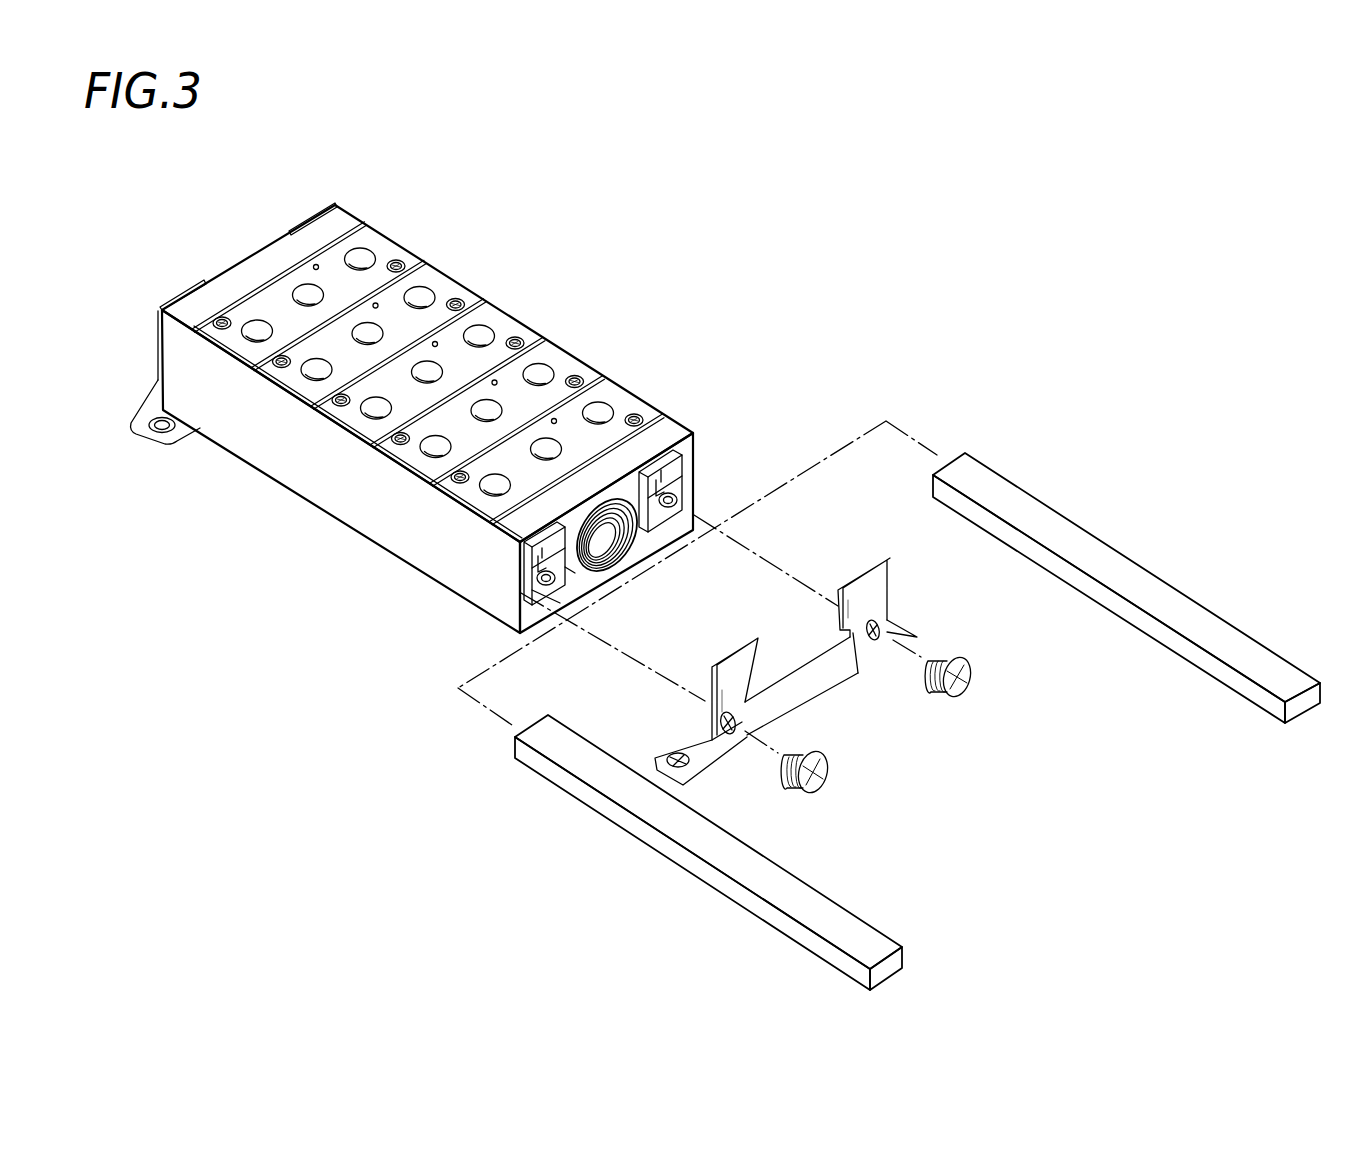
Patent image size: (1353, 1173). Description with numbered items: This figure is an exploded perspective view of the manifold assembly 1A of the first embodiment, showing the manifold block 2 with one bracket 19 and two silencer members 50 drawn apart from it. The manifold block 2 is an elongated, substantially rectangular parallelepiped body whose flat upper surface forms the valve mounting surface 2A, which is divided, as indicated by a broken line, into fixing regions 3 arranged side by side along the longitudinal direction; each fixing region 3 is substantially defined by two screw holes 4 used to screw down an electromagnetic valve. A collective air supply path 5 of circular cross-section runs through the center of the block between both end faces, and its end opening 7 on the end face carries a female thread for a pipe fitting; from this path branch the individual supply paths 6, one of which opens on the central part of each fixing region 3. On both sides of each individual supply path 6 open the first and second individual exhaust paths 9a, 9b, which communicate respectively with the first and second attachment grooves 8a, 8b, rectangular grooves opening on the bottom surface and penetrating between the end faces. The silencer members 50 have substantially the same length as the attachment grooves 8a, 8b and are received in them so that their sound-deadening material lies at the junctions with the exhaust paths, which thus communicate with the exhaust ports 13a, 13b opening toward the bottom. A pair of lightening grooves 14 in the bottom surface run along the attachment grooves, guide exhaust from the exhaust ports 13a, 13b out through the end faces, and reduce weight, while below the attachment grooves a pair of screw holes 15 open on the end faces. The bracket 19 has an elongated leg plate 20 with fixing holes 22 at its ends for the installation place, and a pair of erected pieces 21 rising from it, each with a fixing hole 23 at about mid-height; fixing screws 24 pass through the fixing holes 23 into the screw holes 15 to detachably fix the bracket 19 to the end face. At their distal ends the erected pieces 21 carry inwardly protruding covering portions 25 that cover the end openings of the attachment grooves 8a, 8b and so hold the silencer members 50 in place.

The manifold assembly 1A is at (984, 261).
The manifold block 2 is at (555, 249).
The valve mounting surface 2A is at (339, 212).
The fixing regions 3 is at (507, 322).
The screw holes 4 is at (281, 359).
The collective air supply path 5 is at (597, 510).
The individual supply paths 6 is at (308, 293).
The end opening 7 is at (577, 583).
The first attachment groove 8a is at (521, 565).
The second attachment groove 8b is at (704, 451).
The first individual exhaust paths 9a is at (316, 372).
The second individual exhaust paths 9b is at (361, 258).
The first exhaust port 13a is at (557, 588).
The second exhaust port 13b is at (670, 523).
The lightening grooves 14 is at (652, 553).
The screw holes 15 is at (676, 498).
The bracket 19 is at (528, 451).
The leg plate 20 is at (812, 702).
The erected pieces 21 is at (318, 188).
The fixing holes 22 is at (672, 755).
The fixing holes 23 is at (731, 732).
The fixing screws 24 is at (826, 781).
The covering portions 25 is at (748, 667).
The silencer members 50 is at (1155, 585).